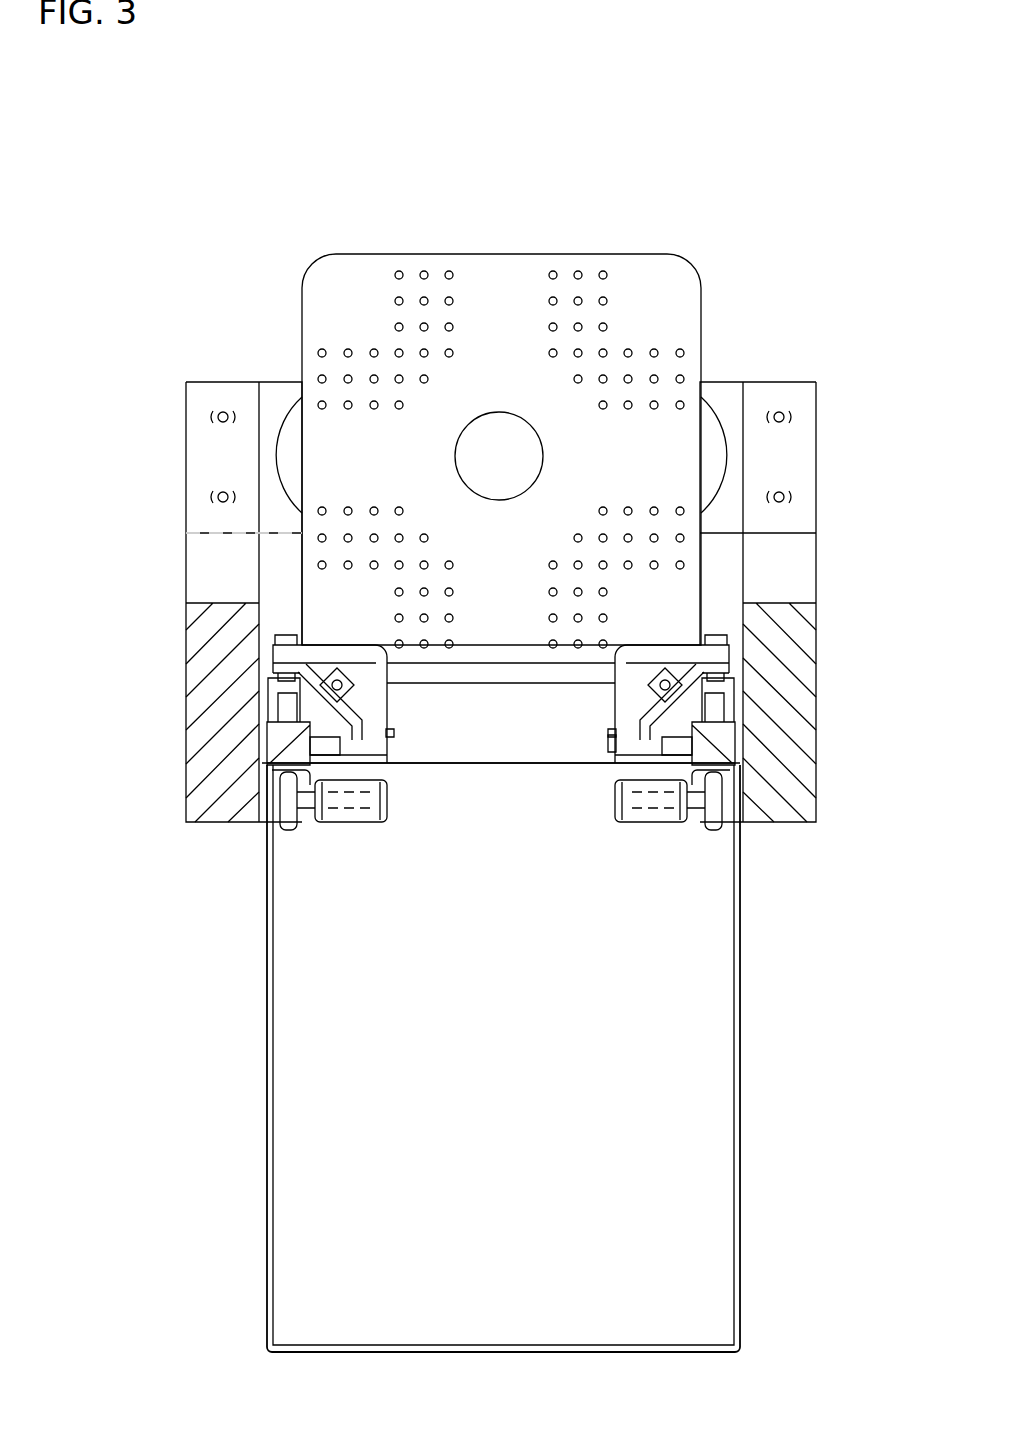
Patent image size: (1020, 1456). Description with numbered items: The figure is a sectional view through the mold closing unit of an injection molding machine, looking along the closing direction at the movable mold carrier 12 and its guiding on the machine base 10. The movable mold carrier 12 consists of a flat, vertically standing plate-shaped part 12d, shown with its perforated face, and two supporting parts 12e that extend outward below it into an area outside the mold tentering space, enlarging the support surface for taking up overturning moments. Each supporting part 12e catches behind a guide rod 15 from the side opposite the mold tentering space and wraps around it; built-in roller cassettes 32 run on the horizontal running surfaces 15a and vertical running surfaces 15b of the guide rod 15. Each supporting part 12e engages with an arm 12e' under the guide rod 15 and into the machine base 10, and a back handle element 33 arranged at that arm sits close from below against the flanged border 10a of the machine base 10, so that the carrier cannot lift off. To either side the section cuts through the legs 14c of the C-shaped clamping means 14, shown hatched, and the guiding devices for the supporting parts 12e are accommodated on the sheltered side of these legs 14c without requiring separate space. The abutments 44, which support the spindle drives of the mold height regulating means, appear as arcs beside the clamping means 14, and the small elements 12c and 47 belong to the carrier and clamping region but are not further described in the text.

The machine base 10 is at (494, 1138).
The flanged border of the machine base 10a is at (278, 770).
The movable mold carrier 12 is at (631, 238).
The bolt of plate 12c is at (330, 735).
The plate-shaped part 12d is at (508, 265).
The supporting part 12e is at (501, 678).
The arm of the supporting part 12e' is at (501, 842).
The clamping means 14 is at (205, 572).
The leg of the clamping means 14c is at (203, 668).
The guide rod 15 is at (290, 747).
The horizontal running surface 15a is at (305, 700).
The vertical running surface 15b is at (335, 757).
The roller cassette 32 is at (625, 743).
The back handle element 33 is at (292, 833).
The abutment 44 is at (278, 395).
The bolt hole 47 is at (219, 395).